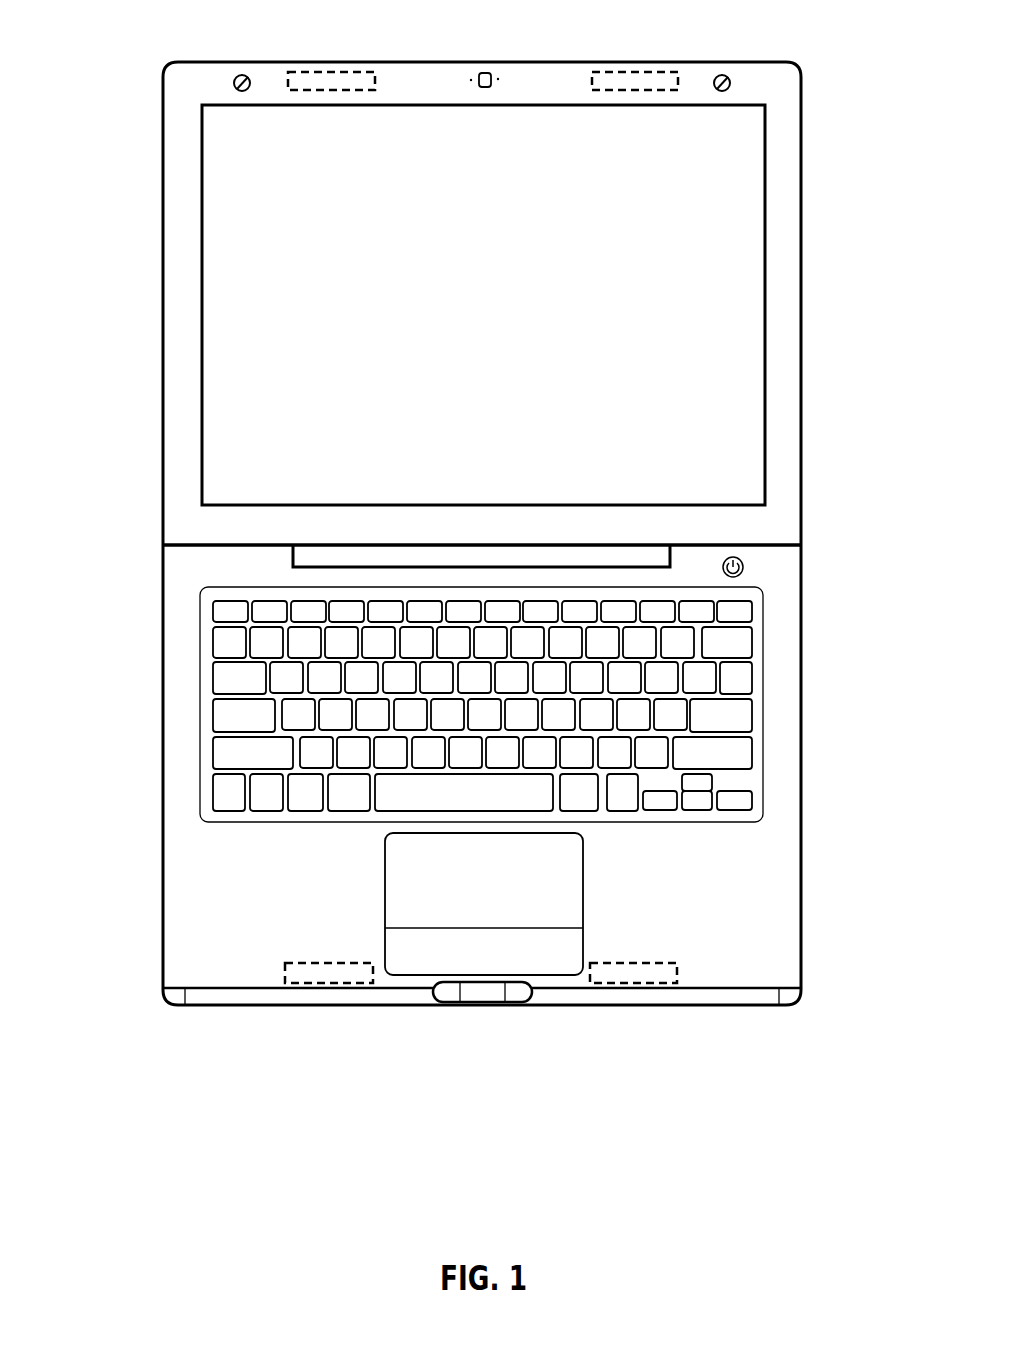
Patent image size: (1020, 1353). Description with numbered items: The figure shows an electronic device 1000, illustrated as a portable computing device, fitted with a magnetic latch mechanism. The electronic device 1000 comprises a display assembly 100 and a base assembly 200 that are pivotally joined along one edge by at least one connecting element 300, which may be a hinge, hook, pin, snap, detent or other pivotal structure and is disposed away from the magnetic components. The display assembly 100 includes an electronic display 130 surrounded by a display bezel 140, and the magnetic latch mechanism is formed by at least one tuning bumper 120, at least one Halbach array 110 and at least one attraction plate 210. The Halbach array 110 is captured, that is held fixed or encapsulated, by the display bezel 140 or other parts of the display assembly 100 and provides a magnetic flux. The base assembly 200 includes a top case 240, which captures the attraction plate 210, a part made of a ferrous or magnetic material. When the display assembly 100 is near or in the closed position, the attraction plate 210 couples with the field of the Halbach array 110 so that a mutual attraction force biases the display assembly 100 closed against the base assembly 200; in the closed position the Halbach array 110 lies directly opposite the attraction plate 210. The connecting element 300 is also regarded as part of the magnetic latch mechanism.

The electronic device 1000 is at (160, 58).
The display assembly 100 is at (532, 278).
The Halbach array 110 is at (332, 80).
The tuning bumper 120 is at (720, 76).
The electronic display 130 is at (743, 312).
The display bezel 140 is at (788, 213).
The base assembly 200 is at (525, 803).
The attraction plate 210 is at (332, 975).
The top case 240 is at (717, 970).
The connecting element 300 is at (670, 560).